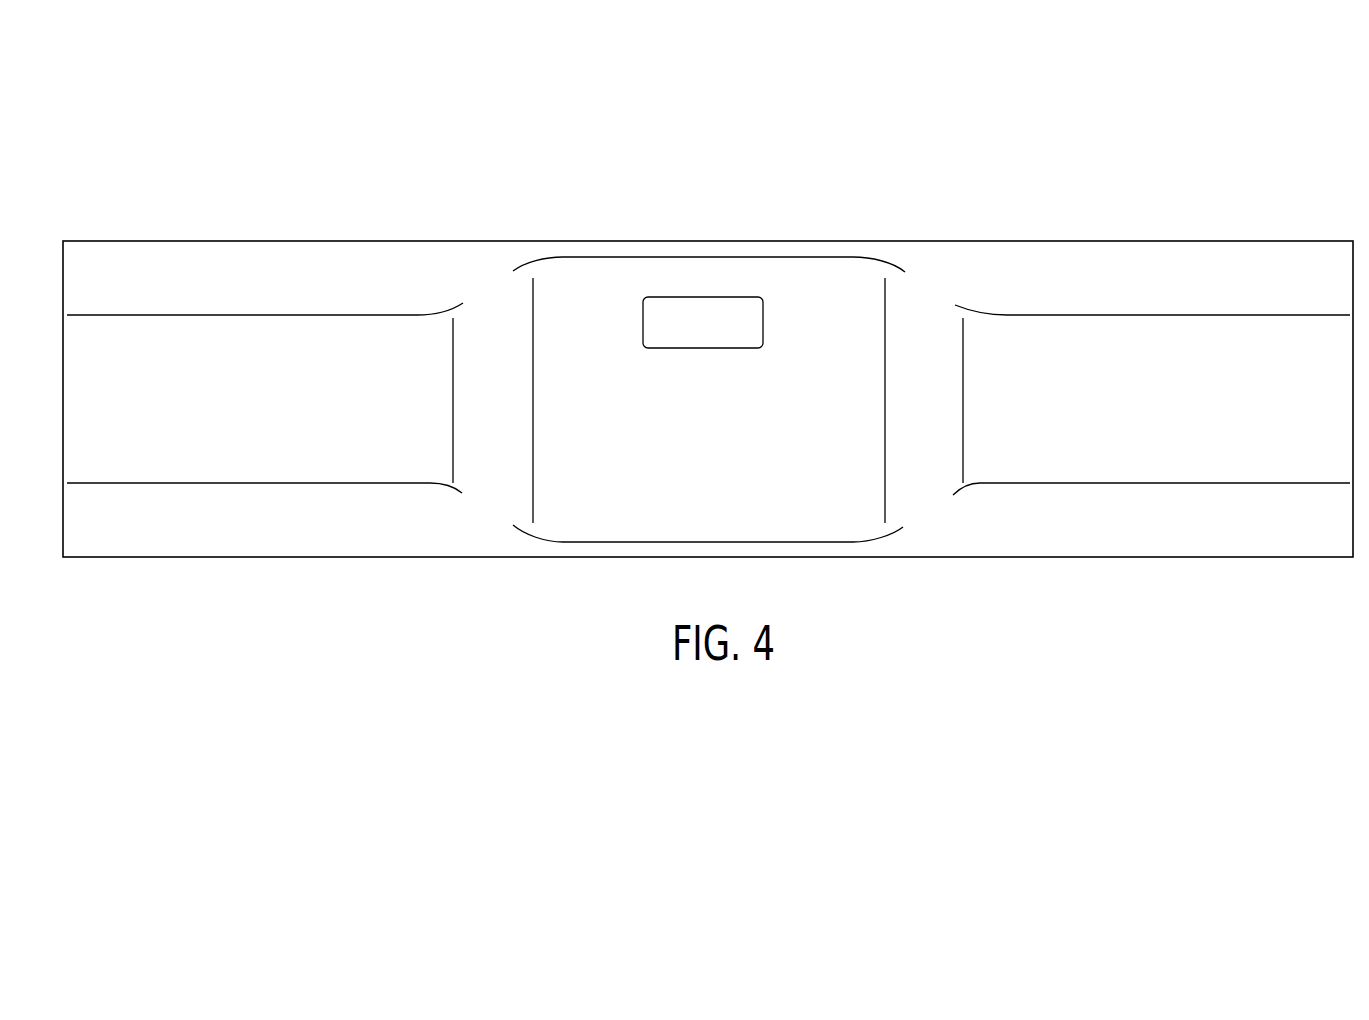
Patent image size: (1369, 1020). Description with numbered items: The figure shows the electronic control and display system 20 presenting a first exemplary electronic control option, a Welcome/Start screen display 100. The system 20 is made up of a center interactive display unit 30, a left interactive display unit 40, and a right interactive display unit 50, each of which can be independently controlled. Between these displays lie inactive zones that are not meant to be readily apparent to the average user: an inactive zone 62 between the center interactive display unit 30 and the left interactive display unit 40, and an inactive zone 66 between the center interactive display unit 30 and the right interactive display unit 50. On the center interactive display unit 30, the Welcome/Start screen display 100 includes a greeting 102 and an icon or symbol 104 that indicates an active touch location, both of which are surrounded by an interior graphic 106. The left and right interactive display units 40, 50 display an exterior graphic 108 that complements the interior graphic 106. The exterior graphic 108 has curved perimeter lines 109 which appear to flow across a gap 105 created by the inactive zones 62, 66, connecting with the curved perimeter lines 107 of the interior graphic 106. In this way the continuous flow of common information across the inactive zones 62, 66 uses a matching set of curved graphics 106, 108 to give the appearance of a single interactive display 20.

The Welcome/Start screen display 100 is at (854, 103).
The electronic control and display system 20 is at (313, 607).
The left interactive display unit 40 is at (188, 266).
The right interactive display unit 50 is at (1076, 262).
The inactive zone 62 is at (480, 274).
The inactive zone 66 is at (936, 275).
The center interactive display unit 30 is at (607, 272).
The greeting 102 is at (669, 482).
The icon or symbol 104 is at (700, 312).
The gap 105 is at (482, 512).
The interior graphic 106 is at (800, 523).
The curved perimeter lines 107 is at (905, 535).
The exterior graphic 108 is at (212, 465).
The curved perimeter lines 109 is at (445, 487).